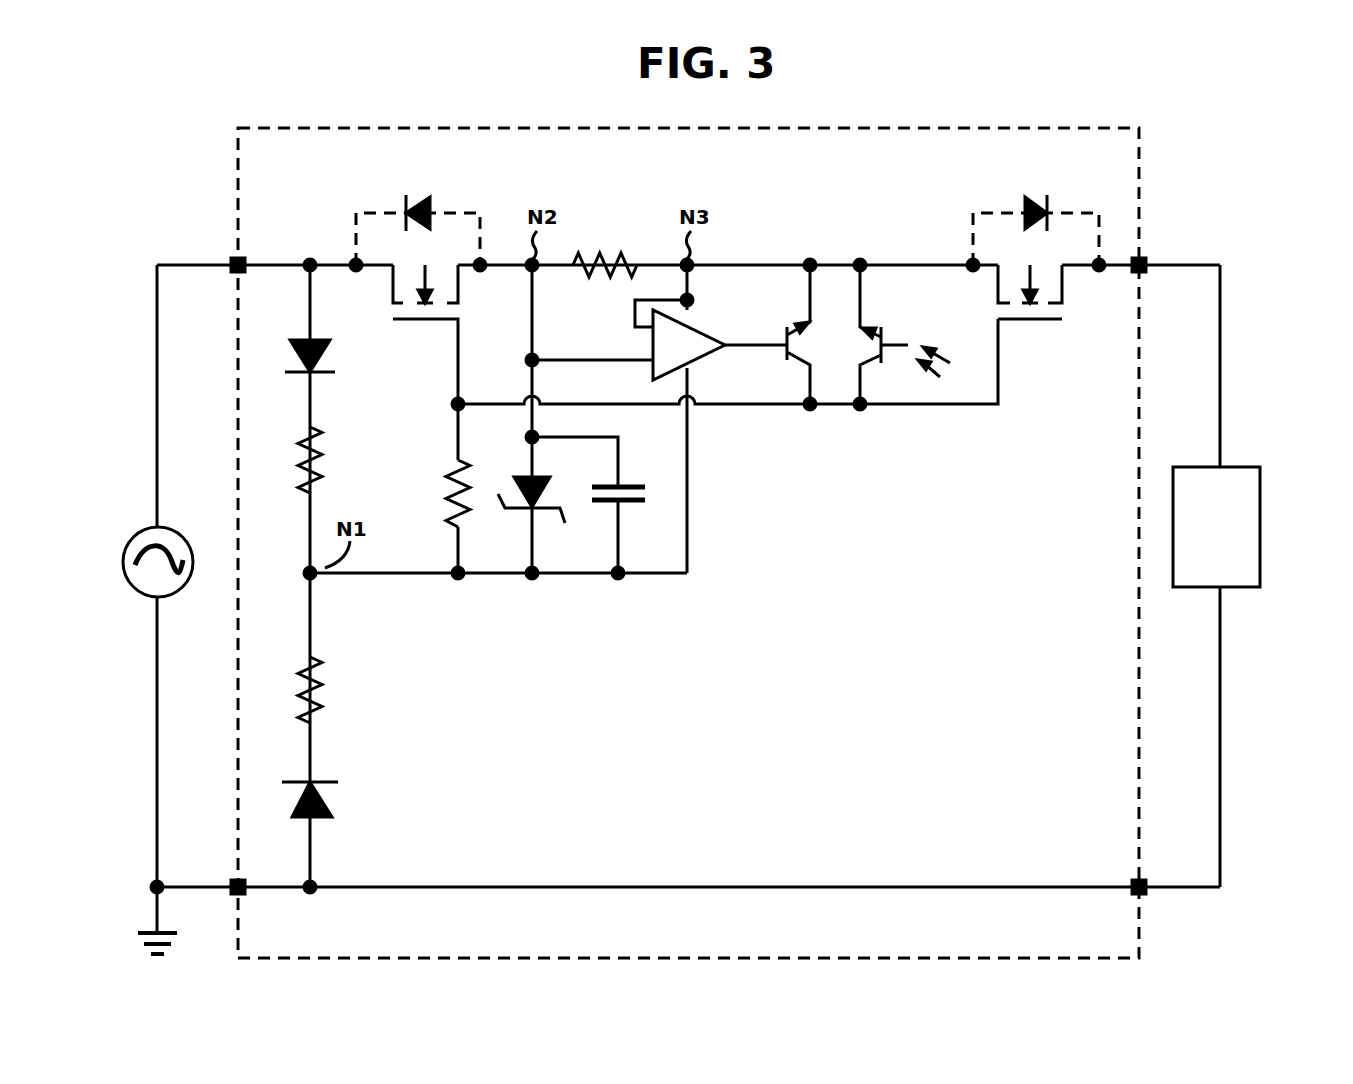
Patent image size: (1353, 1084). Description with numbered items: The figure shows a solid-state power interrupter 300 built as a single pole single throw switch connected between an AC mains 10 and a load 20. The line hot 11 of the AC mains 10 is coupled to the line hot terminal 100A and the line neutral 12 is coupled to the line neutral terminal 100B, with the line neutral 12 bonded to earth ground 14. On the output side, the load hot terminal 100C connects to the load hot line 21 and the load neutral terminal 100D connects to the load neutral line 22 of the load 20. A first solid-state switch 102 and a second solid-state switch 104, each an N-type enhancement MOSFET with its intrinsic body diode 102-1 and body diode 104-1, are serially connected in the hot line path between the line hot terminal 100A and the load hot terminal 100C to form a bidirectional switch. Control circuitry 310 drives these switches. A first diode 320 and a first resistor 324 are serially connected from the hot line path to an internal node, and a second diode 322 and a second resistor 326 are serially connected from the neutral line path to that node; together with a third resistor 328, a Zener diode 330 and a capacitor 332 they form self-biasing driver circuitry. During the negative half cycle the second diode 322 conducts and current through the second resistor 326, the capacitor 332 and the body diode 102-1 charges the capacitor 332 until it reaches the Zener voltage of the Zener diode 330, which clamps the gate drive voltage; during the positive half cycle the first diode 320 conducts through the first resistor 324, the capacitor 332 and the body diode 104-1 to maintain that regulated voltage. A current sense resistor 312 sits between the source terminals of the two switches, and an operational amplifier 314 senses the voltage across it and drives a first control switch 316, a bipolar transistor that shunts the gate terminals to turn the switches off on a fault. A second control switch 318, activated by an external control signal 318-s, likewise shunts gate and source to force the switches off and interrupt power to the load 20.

The solid-state power interrupter 300 is at (248, 128).
The line hot terminal 100A is at (228, 262).
The line neutral terminal 100B is at (227, 896).
The load hot terminal 100C is at (1150, 258).
The load neutral terminal 100D is at (1150, 893).
The AC mains 10 is at (125, 560).
The line hot 11 is at (157, 307).
The line neutral 12 is at (157, 843).
The earth ground 14 is at (131, 933).
The load 20 is at (1260, 518).
The load hot line 21 is at (1220, 385).
The load neutral line 22 is at (1222, 700).
The first solid-state switch 102 is at (419, 337).
The body diode 102-1 is at (435, 207).
The second solid-state switch 104 is at (1042, 337).
The body diode 104-1 is at (1023, 205).
The control circuitry 310 is at (710, 633).
The current sense resistor 312 is at (607, 255).
The operational amplifier 314 is at (692, 362).
The first control switch 316 is at (785, 330).
The second control switch 318 is at (885, 330).
The control signal 318-s is at (962, 369).
The first diode 320 is at (300, 338).
The second diode 322 is at (306, 814).
The first resistor 324 is at (306, 440).
The second resistor 326 is at (306, 671).
The third resistor 328 is at (453, 470).
The Zener diode 330 is at (542, 473).
The capacitor 332 is at (633, 483).